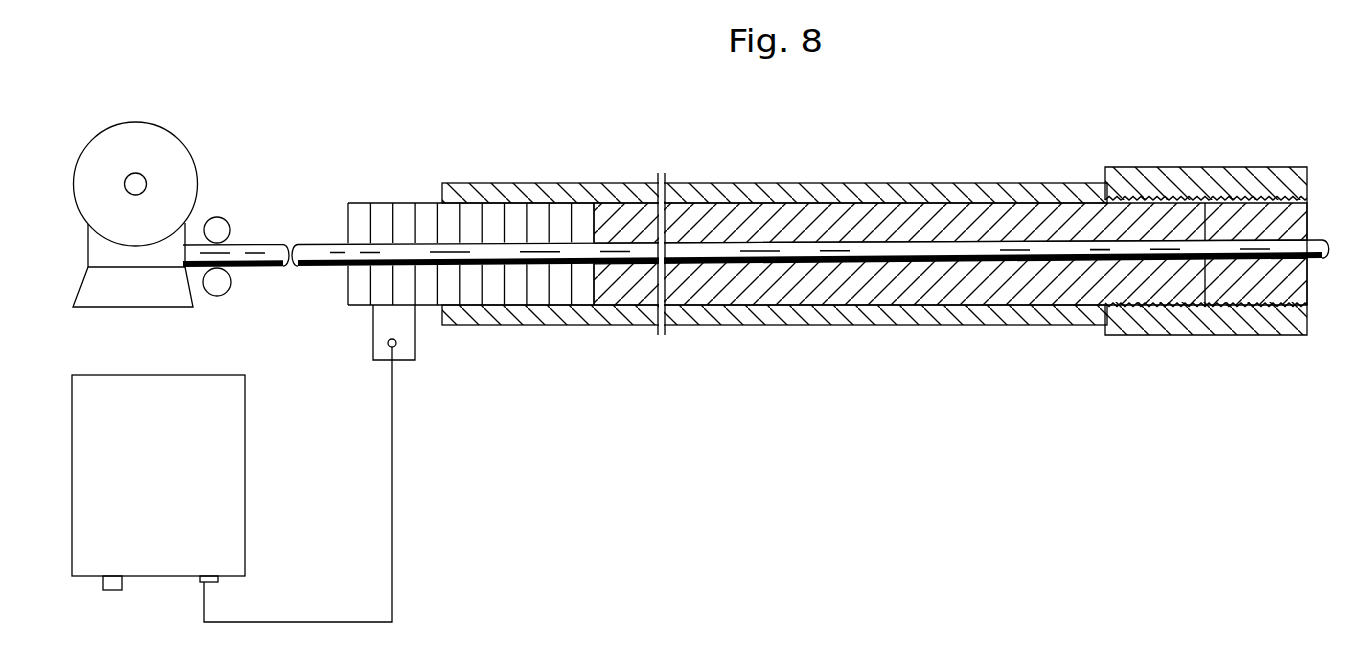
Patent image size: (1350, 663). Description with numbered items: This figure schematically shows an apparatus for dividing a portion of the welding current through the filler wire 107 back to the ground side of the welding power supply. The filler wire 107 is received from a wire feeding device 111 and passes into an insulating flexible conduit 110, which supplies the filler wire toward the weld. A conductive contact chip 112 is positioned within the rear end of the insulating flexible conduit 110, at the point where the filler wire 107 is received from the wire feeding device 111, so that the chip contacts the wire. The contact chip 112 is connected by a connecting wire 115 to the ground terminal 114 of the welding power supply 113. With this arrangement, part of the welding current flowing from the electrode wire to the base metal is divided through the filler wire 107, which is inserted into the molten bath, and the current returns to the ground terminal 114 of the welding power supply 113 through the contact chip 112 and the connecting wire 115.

The filler wire 107 is at (270, 247).
The insulating flexible conduit 110 is at (798, 168).
The wire feeding device 111 is at (186, 133).
The conductive contact chip 112 is at (385, 210).
The welding power supply 113 is at (243, 478).
The ground terminal 114 is at (195, 581).
The connecting wire 115 is at (393, 483).